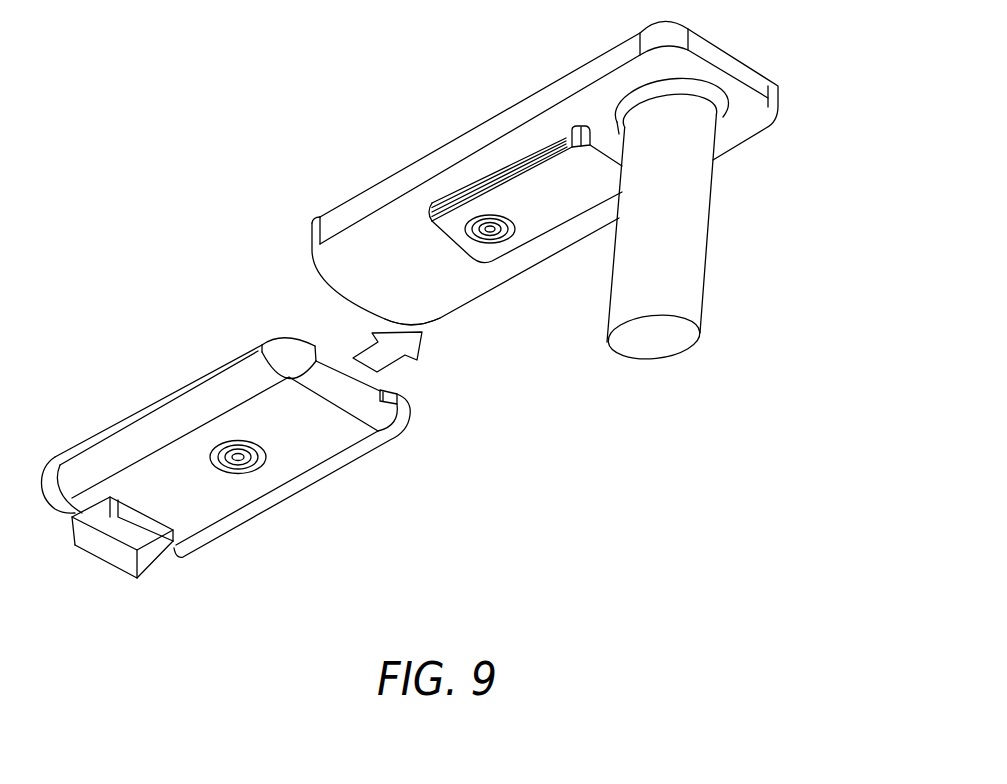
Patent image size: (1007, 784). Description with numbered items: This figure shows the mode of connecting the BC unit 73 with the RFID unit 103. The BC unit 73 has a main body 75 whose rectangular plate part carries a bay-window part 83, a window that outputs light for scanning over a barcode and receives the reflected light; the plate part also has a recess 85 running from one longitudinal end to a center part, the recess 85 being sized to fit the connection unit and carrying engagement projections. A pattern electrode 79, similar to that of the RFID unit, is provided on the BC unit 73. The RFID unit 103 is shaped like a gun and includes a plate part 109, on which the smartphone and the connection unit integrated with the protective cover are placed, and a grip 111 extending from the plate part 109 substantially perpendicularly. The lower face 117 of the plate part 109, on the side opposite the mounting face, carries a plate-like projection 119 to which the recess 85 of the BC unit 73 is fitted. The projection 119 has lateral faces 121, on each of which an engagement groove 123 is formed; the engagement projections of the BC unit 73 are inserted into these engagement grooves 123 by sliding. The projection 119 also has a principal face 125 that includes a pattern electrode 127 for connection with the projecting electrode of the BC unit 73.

The BC unit 73 is at (284, 524).
The main body 75 is at (160, 395).
The pattern electrode 79 is at (220, 475).
The bay-window part 83 is at (121, 555).
The recess 85 is at (332, 364).
The RFID unit 103 is at (573, 360).
The plate part 109 is at (392, 172).
The grip 111 is at (712, 254).
The lower face 117 is at (438, 290).
The plate-like projection 119 is at (444, 248).
The lateral faces 121 is at (570, 136).
The engagement groove 123 is at (512, 170).
The principal face 125 is at (548, 203).
The pattern electrode 127 is at (504, 210).